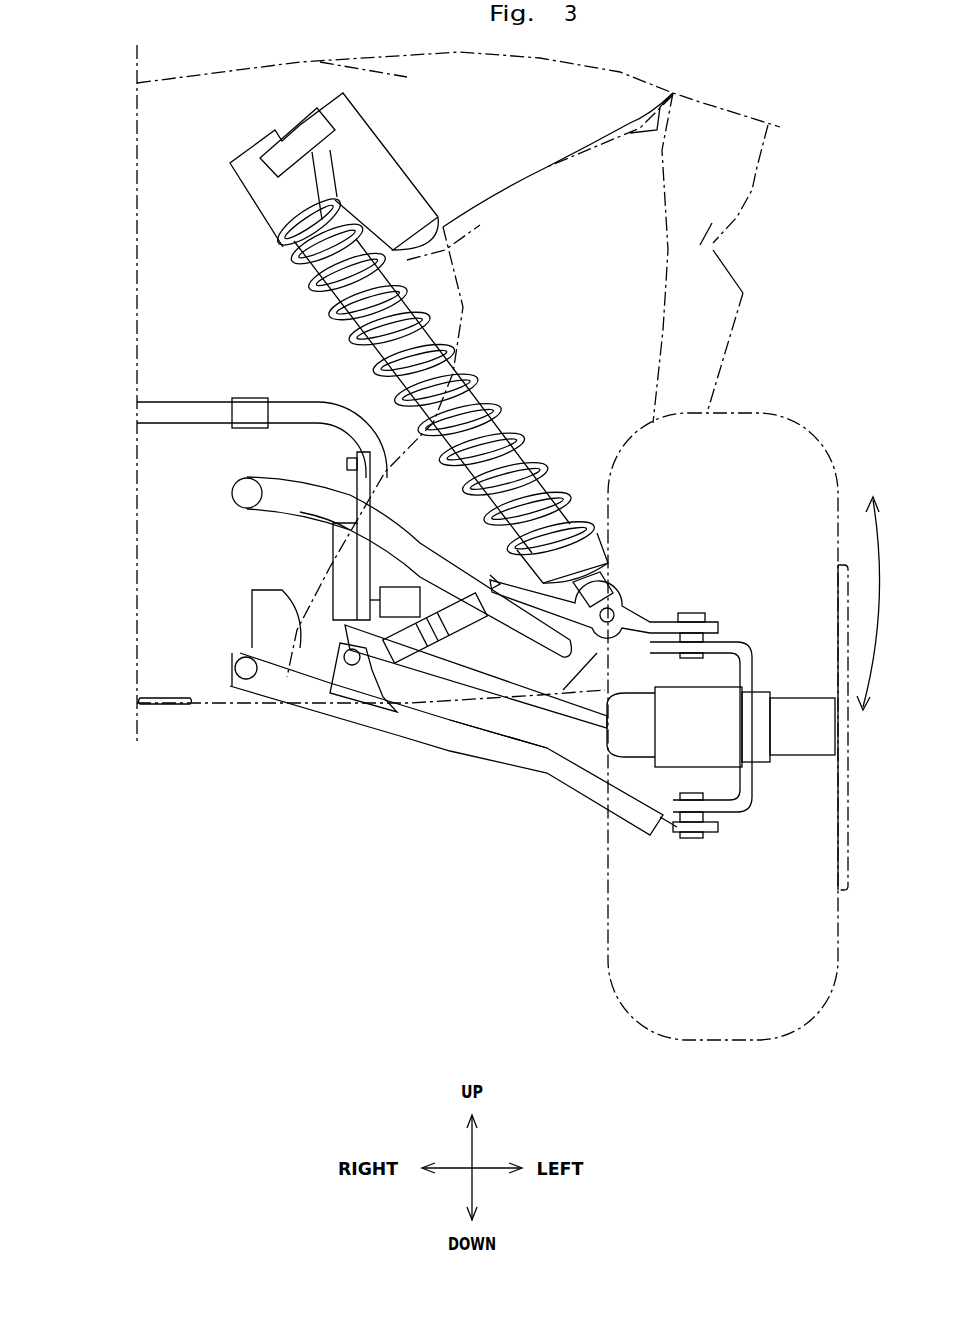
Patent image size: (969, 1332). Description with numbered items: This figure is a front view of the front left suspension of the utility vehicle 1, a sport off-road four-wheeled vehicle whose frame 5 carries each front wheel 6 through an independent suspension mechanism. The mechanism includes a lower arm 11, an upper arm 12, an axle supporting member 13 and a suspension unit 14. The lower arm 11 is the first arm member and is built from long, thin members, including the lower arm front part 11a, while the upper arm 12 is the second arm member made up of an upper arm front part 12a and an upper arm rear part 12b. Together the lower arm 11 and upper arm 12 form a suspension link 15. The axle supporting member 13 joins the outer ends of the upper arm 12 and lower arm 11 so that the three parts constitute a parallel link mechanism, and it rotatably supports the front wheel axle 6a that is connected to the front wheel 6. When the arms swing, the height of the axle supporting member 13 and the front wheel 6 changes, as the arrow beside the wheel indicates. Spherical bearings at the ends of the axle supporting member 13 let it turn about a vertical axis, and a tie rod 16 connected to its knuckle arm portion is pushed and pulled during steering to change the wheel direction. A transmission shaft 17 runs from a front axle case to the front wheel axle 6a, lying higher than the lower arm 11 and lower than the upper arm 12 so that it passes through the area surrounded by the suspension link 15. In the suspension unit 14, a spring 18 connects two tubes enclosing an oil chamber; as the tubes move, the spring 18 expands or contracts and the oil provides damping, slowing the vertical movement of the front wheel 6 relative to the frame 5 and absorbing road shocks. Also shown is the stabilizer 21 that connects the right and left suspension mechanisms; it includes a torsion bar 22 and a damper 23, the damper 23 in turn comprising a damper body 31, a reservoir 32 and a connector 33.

The utility vehicle 1 is at (143, 1192).
The frame 5 is at (193, 704).
The front wheel 6 is at (713, 1042).
The front wheel axle 6a is at (812, 712).
The lower arm 11 is at (457, 763).
The lower arm front part 11a is at (485, 747).
The upper arm 12 is at (323, 478).
The upper arm front part 12a is at (310, 487).
The upper arm rear part 12b is at (288, 513).
The axle supporting member 13 is at (755, 778).
The suspension unit 14 is at (300, 302).
The suspension link 15 is at (637, 862).
The tie rod 16 is at (610, 587).
The transmission shaft 17 is at (547, 700).
The spring 18 is at (490, 393).
The stabilizer 21 is at (110, 387).
The torsion bar 22 is at (167, 413).
The damper 23 is at (310, 620).
The damper body 31 is at (352, 572).
The reservoir 32 is at (405, 585).
The connector 33 is at (445, 632).